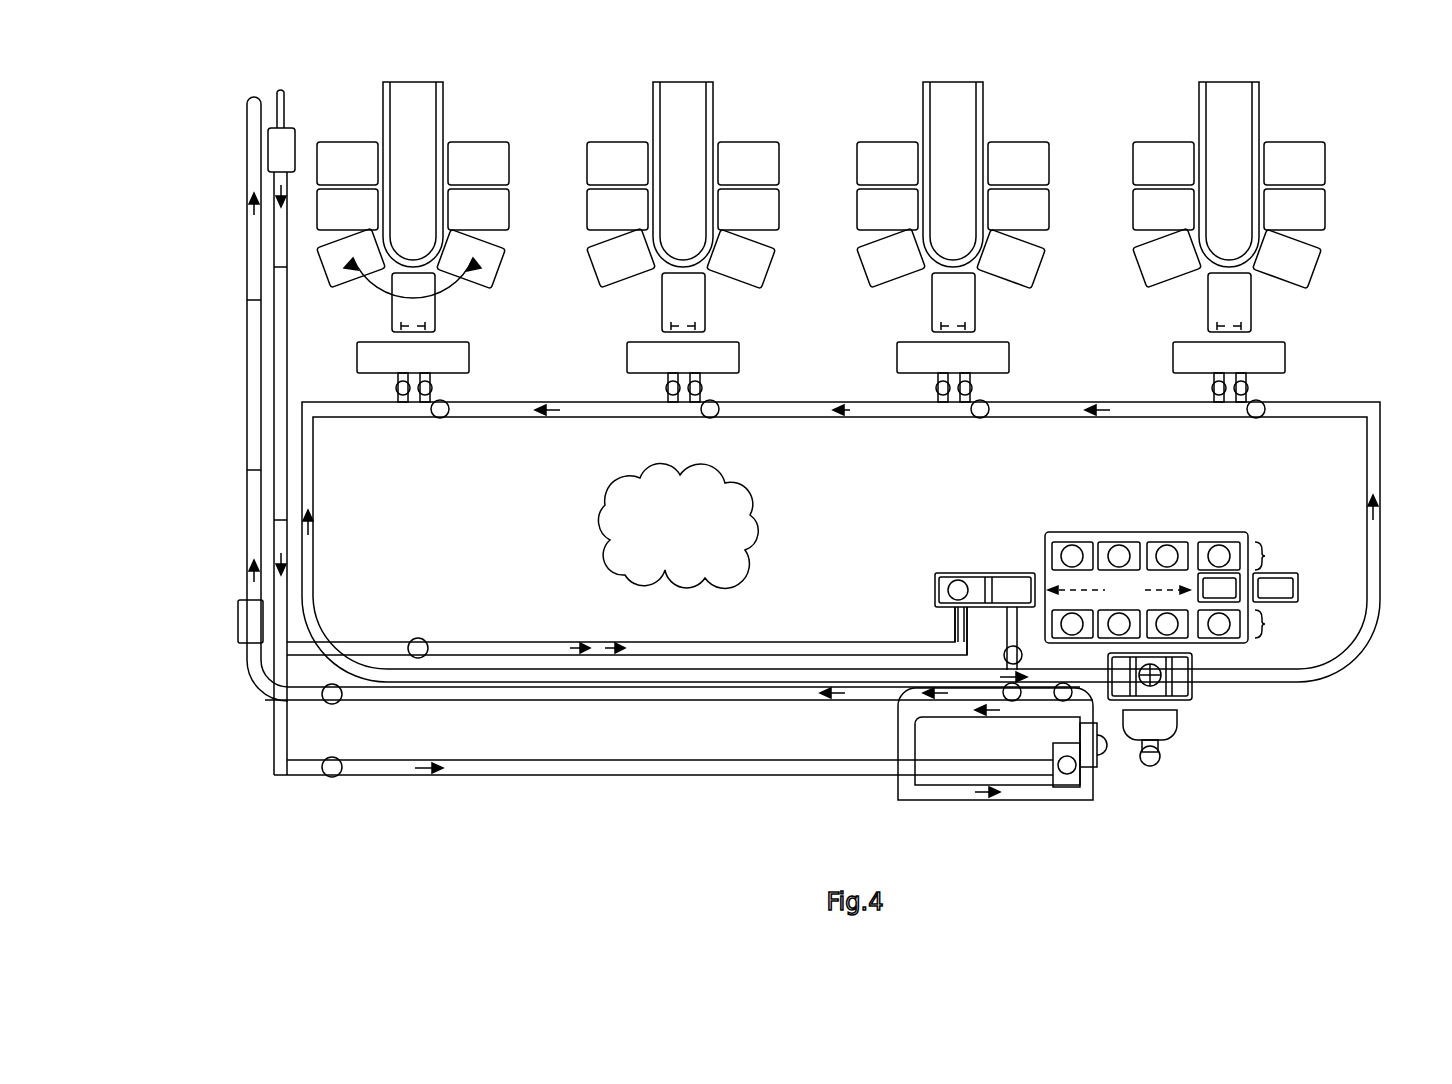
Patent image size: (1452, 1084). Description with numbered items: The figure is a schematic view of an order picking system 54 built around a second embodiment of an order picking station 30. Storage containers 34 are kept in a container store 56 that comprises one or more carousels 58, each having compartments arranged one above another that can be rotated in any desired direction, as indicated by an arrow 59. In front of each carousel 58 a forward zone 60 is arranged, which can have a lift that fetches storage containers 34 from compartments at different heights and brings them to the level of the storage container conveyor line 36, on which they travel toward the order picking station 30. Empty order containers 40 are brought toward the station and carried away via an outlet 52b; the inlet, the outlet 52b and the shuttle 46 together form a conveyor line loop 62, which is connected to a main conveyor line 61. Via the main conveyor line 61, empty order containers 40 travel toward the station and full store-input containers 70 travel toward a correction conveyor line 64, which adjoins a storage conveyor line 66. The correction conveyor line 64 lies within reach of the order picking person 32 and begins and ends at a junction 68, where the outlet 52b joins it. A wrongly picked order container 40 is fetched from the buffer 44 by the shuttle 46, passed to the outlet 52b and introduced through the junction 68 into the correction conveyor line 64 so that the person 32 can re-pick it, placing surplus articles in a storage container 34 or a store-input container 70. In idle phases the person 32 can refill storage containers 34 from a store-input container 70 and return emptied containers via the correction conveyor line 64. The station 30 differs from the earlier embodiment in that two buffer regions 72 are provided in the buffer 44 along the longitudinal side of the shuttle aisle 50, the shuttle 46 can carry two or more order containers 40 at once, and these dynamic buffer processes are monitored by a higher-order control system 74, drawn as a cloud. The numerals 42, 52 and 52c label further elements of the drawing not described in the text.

The order picking station 30 is at (1217, 724).
The order picking person 32 is at (1172, 740).
The storage container 34 is at (1194, 690).
The storage container conveyor line 36 is at (316, 452).
The order container 40 is at (1173, 600).
The valves 42 is at (1078, 544).
The buffer 44 is at (1249, 536).
The shuttle 46 is at (976, 573).
The shuttle aisle 50 is at (1111, 602).
The return line 52 is at (640, 642).
The outlet 52b is at (250, 366).
The return line branch 52c is at (955, 626).
The order picking system 54 is at (593, 795).
The container store 56 is at (522, 110).
The carousel 58 is at (821, 207).
The arrow 59 is at (455, 300).
The forward zone 60 is at (821, 380).
The main conveyor line 61 is at (288, 332).
The conveyor line loop 62 is at (957, 642).
The correction conveyor line 64 is at (1028, 800).
The storage conveyor line 66 is at (683, 775).
The junction 68 is at (1005, 701).
The store-input container 70 is at (1086, 793).
The buffer region 72 is at (1276, 586).
The higher-order control system 74 is at (667, 542).